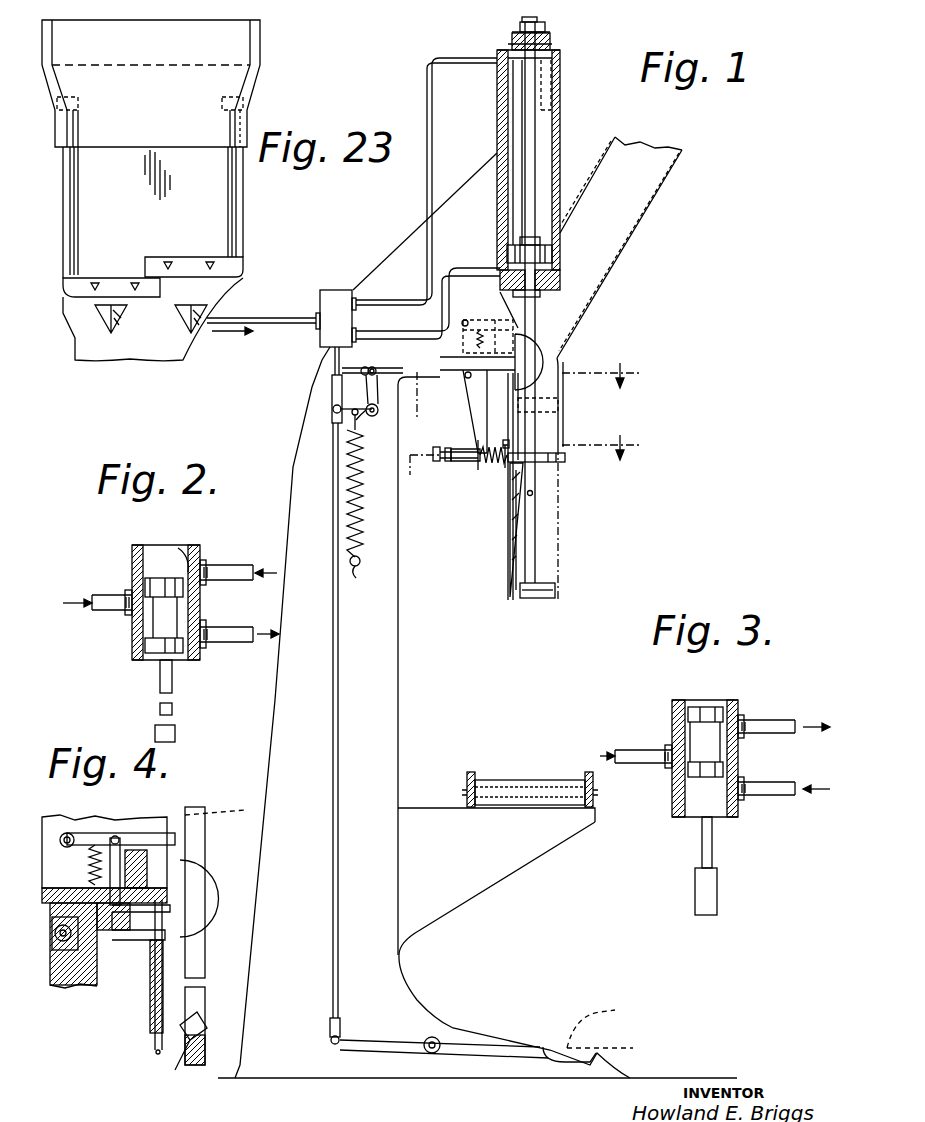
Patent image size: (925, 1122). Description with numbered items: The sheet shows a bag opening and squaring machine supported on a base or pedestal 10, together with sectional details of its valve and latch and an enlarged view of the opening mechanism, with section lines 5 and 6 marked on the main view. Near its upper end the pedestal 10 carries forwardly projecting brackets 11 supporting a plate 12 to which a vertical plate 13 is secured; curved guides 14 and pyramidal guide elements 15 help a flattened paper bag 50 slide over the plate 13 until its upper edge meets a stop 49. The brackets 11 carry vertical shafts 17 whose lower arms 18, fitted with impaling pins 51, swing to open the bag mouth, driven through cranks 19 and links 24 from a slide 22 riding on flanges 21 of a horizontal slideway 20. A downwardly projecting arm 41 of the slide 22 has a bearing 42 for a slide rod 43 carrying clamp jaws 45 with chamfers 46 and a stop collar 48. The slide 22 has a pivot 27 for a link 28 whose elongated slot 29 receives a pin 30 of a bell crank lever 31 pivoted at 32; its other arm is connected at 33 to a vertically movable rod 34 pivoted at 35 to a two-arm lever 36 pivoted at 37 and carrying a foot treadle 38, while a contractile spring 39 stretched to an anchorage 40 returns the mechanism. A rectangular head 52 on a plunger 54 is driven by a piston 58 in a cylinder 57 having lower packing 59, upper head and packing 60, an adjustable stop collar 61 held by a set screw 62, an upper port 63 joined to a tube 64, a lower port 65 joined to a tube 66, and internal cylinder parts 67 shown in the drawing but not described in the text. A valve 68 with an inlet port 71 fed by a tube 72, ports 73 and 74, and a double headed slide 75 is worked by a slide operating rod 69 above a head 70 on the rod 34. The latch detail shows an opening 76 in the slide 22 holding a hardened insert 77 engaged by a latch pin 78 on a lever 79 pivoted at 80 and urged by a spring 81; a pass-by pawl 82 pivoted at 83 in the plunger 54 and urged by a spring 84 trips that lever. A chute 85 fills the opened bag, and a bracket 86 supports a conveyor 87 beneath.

In FIG. 1, the section line 5- 5 is at (535, 400).
In FIG. 1, the section line 6- 6 is at (533, 466).
In FIG. 1, the base or pedestal 10 is at (402, 705).
In FIG. 23, the forwardly projecting brackets 11 is at (55, 42).
In FIG. 1, the forwardly projecting brackets 11 is at (562, 372).
In FIG. 1, the plate 12 is at (508, 410).
In FIG. 23, the plate 13 is at (110, 160).
In FIG. 1, the plate 13 is at (510, 548).
In FIG. 1, the curved guides 14 is at (515, 560).
In FIG. 23, the guide elements 15 is at (180, 318).
In FIG. 23, the vertical shafts 17 is at (75, 200).
In FIG. 23, the arms 18 is at (120, 285).
In FIG. 1, the arms 18 is at (546, 463).
In FIG. 1, the crank 19 is at (465, 323).
In FIG. 4, the horizontal slideway 20 is at (170, 908).
In FIG. 4, the inwardly projecting flanges 21 is at (165, 935).
In FIG. 1, the slide 22 is at (470, 395).
In FIG. 4, the slide 22 is at (75, 985).
In FIG. 23, the links 24 is at (78, 100).
In FIG. 4, the links 24 is at (138, 950).
In FIG. 1, the horizontal pivot 27 is at (465, 377).
In FIG. 4, the horizontal pivot 27 is at (50, 955).
In FIG. 1, the link 28 is at (440, 360).
In FIG. 1, the elongated slot 29 is at (330, 370).
In FIG. 1, the pin 30 is at (378, 362).
In FIG. 1, the bell crank lever 31 is at (374, 416).
In FIG. 1, the pivot 32 is at (362, 428).
In FIG. 1, the pivotal connection 33 is at (333, 409).
In FIG. 1, the vertically movable rod 34 is at (333, 610).
In FIG. 1, the pivotal connection 35 is at (330, 1040).
In FIG. 1, the two-arm lever 36 is at (380, 1040).
In FIG. 1, the pivot 37 is at (436, 1037).
In FIG. 1, the foot treadle 38 is at (545, 1047).
In FIG. 1, the contractile spring 39 is at (347, 490).
In FIG. 1, the anchorage 40 is at (356, 578).
In FIG. 1, the downwardly projecting arm 41 is at (468, 460).
In FIG. 1, the horizontal bearing 42 is at (476, 461).
In FIG. 1, the slide rod 43 is at (446, 456).
In FIG. 1, the clamp jaws 45 is at (490, 462).
In FIG. 1, the chamfer 46 is at (505, 470).
In FIG. 1, the stop collar 48 is at (441, 448).
In FIG. 1, the stop 49 is at (504, 440).
In FIG. 1, the flattened paper bag 50 is at (560, 557).
In FIG. 1, the impaling pins 51 is at (565, 460).
In FIG. 1, the rectangular head 52 is at (542, 598).
In FIG. 1, the plunger 54 is at (536, 520).
In FIG. 4, the plunger 54 is at (205, 968).
In FIG. 1, the cylinder 57 is at (497, 197).
In FIG. 1, the piston 58 is at (503, 272).
In FIG. 1, the packing 59 is at (546, 296).
In FIG. 1, the head and packing 60 is at (552, 45).
In FIG. 1, the adjustable stop collar 61 is at (518, 25).
In FIG. 1, the set screw 62 is at (548, 27).
In FIG. 1, the upper fluid pressure port 63 is at (512, 72).
In FIG. 1, the tube 64 is at (437, 56).
In FIG. 2, the tube 64 is at (225, 567).
In FIG. 3, the tube 64 is at (770, 720).
In FIG. 1, the lower fluid pressure port 65 is at (508, 256).
In FIG. 1, the fluid pressure tube 66 is at (445, 316).
In FIG. 2, the fluid pressure tube 66 is at (235, 645).
In FIG. 3, the fluid pressure tube 66 is at (775, 798).
In FIG. 1, the packing 67 is at (552, 112).
In FIG. 1, the valve 68 is at (336, 290).
In FIG. 1, the slide operating rod 69 is at (335, 353).
In FIG. 2, the slide operating rod 69 is at (175, 708).
In FIG. 3, the slide operating rod 69 is at (700, 848).
In FIG. 1, the head 70 is at (332, 392).
In FIG. 2, the head 70 is at (153, 733).
In FIG. 3, the head 70 is at (718, 880).
In FIG. 2, the fluid pressure inlet port 71 is at (140, 628).
In FIG. 3, the fluid pressure inlet port 71 is at (675, 785).
In FIG. 1, the tube 72 is at (270, 317).
In FIG. 2, the tube 72 is at (114, 596).
In FIG. 3, the tube 72 is at (648, 737).
In FIG. 2, the port 73 is at (180, 548).
In FIG. 3, the port 73 is at (735, 706).
In FIG. 2, the port 74 is at (200, 660).
In FIG. 3, the port 74 is at (722, 810).
In FIG. 2, the double headed slide 75 is at (165, 640).
In FIG. 3, the double headed slide 75 is at (710, 745).
In FIG. 4, the opening 76 is at (130, 940).
In FIG. 4, the hardened insert 77 is at (122, 895).
In FIG. 4, the latch pin 78 is at (105, 833).
In FIG. 1, the lever 79 is at (480, 330).
In FIG. 4, the lever 79 is at (140, 840).
In FIG. 1, the pivot 80 is at (467, 320).
In FIG. 4, the pivot 80 is at (67, 833).
In FIG. 4, the contractile spring 81 is at (95, 862).
In FIG. 1, the pass-by pawl 82 is at (533, 493).
In FIG. 4, the pass-by pawl 82 is at (209, 948).
In FIG. 4, the pivot 83 is at (207, 1030).
In FIG. 4, the spring 84 is at (205, 1012).
In FIG. 1, the chute 85 is at (667, 207).
In FIG. 1, the bracket 86 is at (525, 862).
In FIG. 1, the conveyor 87 is at (485, 778).